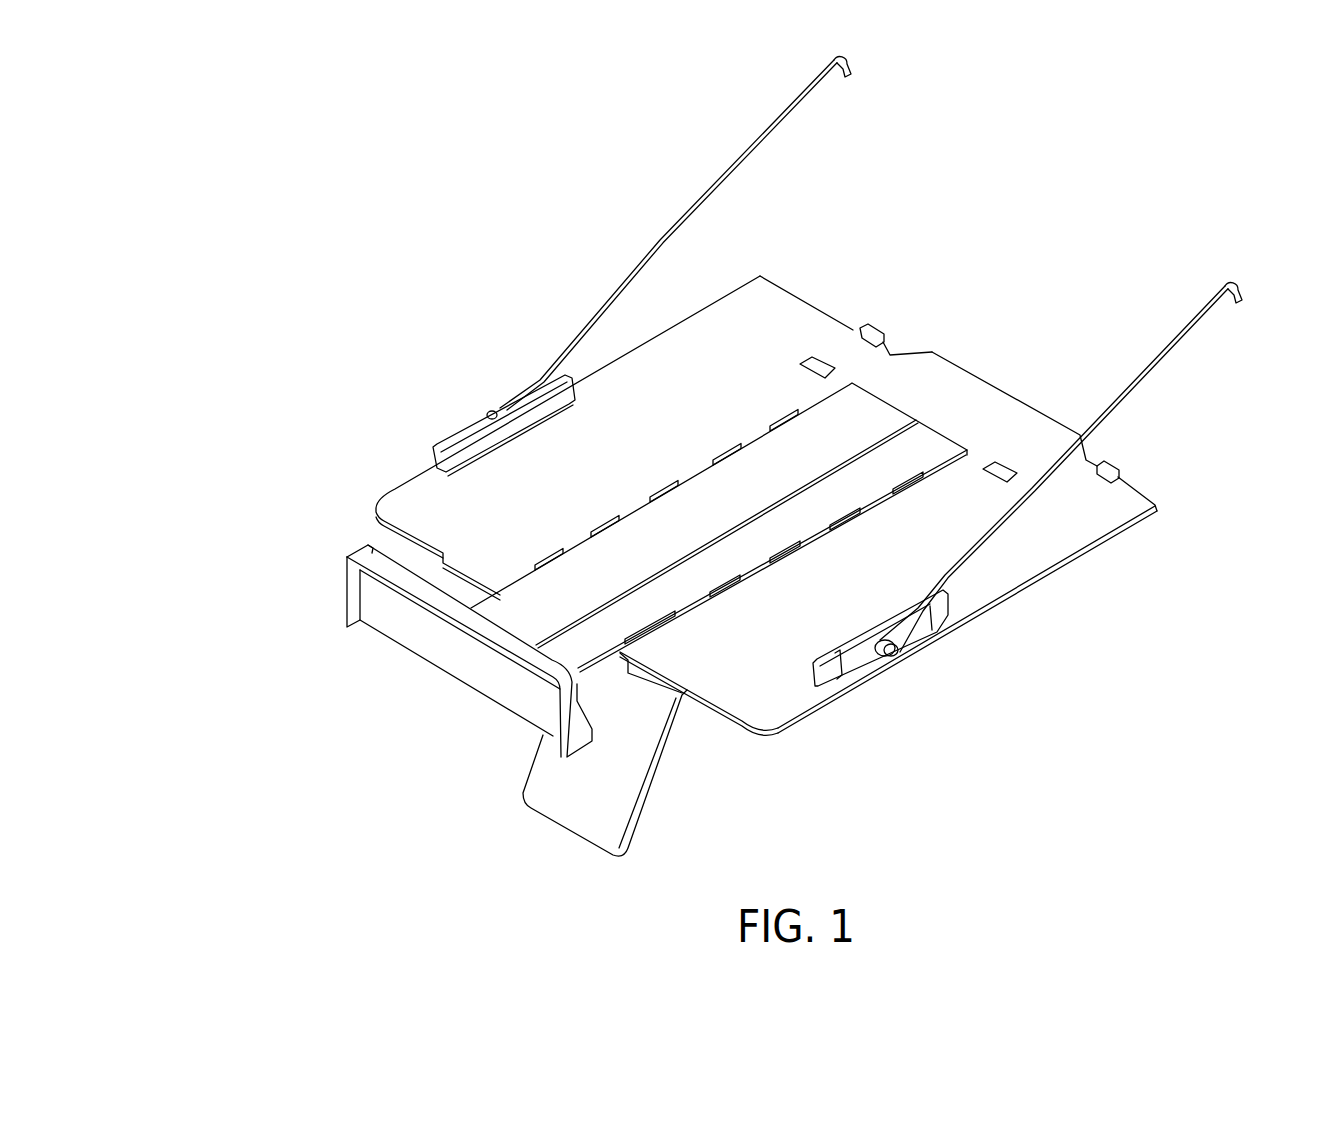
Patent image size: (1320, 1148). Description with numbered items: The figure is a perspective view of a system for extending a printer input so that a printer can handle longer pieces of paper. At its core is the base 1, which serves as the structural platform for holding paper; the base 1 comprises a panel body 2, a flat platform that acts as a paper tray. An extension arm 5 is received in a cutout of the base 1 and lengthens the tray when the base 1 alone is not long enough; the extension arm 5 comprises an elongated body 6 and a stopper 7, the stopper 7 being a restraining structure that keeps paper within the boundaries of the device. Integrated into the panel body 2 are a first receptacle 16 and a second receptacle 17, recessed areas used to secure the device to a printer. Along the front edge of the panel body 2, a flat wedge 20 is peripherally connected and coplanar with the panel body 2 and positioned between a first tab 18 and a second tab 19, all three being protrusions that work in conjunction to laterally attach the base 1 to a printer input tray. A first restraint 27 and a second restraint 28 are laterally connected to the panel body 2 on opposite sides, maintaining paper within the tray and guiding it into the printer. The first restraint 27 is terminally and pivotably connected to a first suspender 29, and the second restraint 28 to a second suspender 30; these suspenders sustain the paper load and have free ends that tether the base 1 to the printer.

The base 1 is at (1105, 673).
The panel body 2 is at (413, 483).
The extension arm 5 is at (247, 499).
The elongated body 6 is at (585, 593).
The stopper 7 is at (316, 582).
The first receptacle 16 is at (823, 357).
The second receptacle 17 is at (1005, 459).
The first tab 18 is at (884, 330).
The second tab 19 is at (1107, 463).
The flat wedge 20 is at (1005, 394).
The first restraint 27 is at (512, 430).
The second restraint 28 is at (861, 645).
The first suspender 29 is at (577, 333).
The second suspender 30 is at (1018, 508).